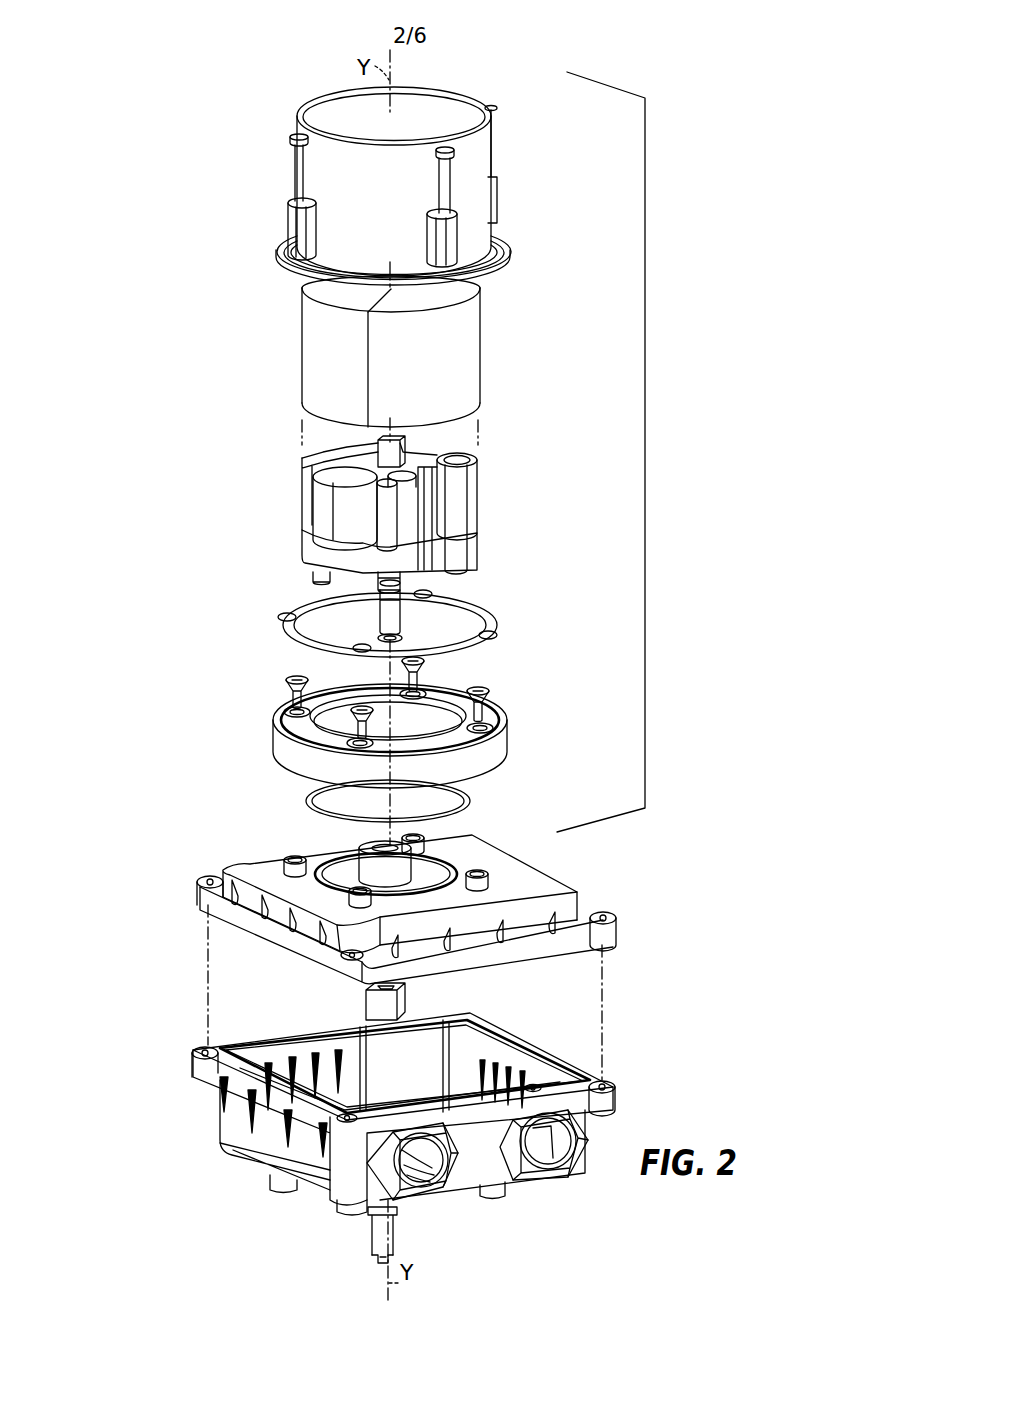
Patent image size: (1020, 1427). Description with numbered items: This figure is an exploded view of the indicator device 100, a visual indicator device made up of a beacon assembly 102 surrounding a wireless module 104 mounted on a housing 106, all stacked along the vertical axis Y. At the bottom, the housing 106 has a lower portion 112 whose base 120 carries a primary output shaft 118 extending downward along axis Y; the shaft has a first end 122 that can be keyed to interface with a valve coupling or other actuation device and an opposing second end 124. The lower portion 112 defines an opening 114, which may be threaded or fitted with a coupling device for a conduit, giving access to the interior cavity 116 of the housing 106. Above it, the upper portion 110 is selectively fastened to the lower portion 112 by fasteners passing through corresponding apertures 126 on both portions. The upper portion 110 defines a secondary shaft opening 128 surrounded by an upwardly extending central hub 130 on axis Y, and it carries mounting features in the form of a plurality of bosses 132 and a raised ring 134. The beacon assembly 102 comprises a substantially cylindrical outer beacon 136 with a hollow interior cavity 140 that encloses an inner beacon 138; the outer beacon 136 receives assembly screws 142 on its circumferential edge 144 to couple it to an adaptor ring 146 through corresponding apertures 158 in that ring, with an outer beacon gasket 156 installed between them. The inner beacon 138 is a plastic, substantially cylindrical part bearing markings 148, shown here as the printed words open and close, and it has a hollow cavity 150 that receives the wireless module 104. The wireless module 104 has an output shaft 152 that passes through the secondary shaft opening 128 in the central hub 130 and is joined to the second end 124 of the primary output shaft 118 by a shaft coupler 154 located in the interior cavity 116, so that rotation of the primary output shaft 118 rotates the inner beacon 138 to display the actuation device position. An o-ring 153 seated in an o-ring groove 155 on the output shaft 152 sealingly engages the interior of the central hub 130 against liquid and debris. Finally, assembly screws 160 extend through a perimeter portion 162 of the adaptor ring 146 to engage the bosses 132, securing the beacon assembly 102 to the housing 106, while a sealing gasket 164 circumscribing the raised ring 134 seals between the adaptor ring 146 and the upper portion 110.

The indicator device 100 is at (230, 104).
The beacon assembly 102 is at (645, 400).
The wireless module 104 is at (482, 500).
The housing 106 is at (654, 993).
The upper portion 110 is at (615, 932).
The lower portion 112 is at (610, 1100).
The opening 114 is at (558, 1175).
The interior cavity 116 is at (496, 1058).
The primary output shaft 118 is at (388, 1228).
The base 120 is at (310, 1198).
The first end 122 is at (378, 1262).
The second end 124 is at (405, 1158).
The apertures 126 is at (206, 878).
The secondary shaft opening 128 is at (375, 843).
The central hub 130 is at (570, 900).
The bosses 132 is at (287, 862).
The raised ring 134 is at (338, 890).
The outer beacon 136 is at (477, 139).
The inner beacon 138 is at (483, 334).
The interior cavity 140 is at (286, 264).
The assembly screws 142 is at (298, 183).
The circumferential edge 144 is at (500, 258).
The adaptor ring 146 is at (502, 742).
The markings 148 is at (310, 348).
The hollow cavity 150 is at (300, 420).
The output shaft 152 is at (400, 615).
The o-ring 153 is at (320, 620).
The shaft coupler 154 is at (400, 1000).
The o-ring groove 155 is at (382, 580).
The outer beacon gasket 156 is at (490, 632).
The apertures 158 is at (290, 700).
The assembly screws 160 is at (296, 678).
The perimeter portion 162 is at (282, 720).
The sealing gasket 164 is at (455, 805).